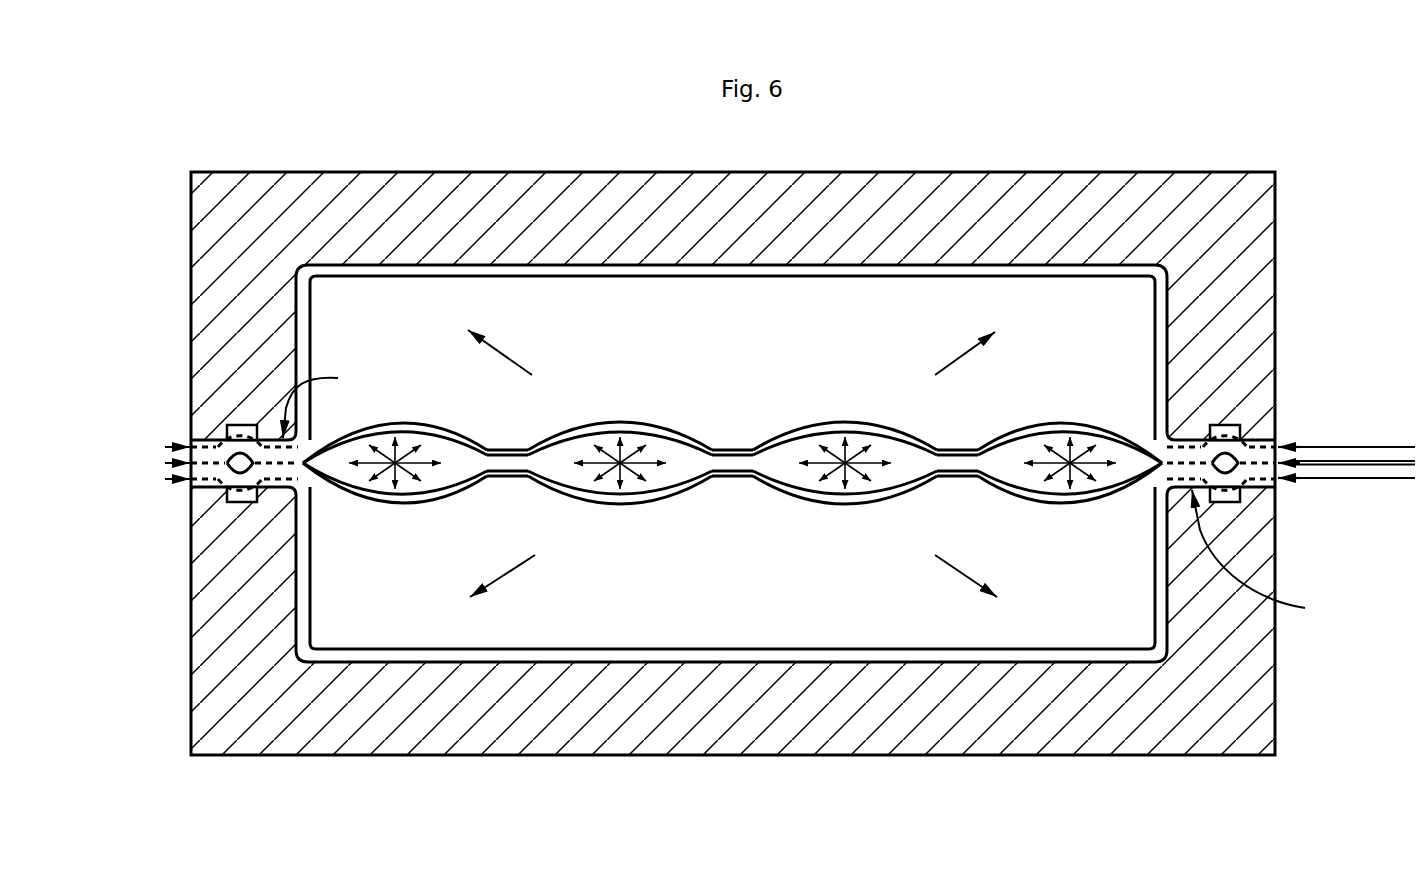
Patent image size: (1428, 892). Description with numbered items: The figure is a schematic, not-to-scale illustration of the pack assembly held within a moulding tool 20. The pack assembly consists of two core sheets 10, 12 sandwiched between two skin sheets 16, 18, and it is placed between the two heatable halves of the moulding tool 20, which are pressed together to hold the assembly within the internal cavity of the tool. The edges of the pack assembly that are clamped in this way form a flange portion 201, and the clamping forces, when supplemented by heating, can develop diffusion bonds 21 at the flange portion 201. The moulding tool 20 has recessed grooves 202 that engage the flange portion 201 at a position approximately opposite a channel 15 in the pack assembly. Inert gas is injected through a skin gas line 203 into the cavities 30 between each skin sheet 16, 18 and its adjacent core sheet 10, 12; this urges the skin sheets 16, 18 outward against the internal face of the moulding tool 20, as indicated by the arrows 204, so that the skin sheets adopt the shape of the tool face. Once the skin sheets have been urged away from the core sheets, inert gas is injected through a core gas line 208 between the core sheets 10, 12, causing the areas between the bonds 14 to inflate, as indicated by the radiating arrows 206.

The core sheet 10 is at (1062, 440).
The core sheet 12 is at (1098, 495).
The bond 14 is at (512, 446).
The channel 15 is at (235, 495).
The skin sheet 16 is at (545, 266).
The skin sheet 18 is at (600, 662).
The moulding tool 20 is at (305, 197).
The diffusion bond 21 is at (178, 446).
The cavity 30 is at (718, 341).
The flange portion 201 is at (817, 491).
The recessed groove 202 is at (240, 425).
The skin gas line 203 is at (1337, 447).
The arrows indicating skin sheet movement 204 is at (505, 353).
The arrows indicating inflation 206 is at (397, 478).
The core gas line 208 is at (1397, 447).